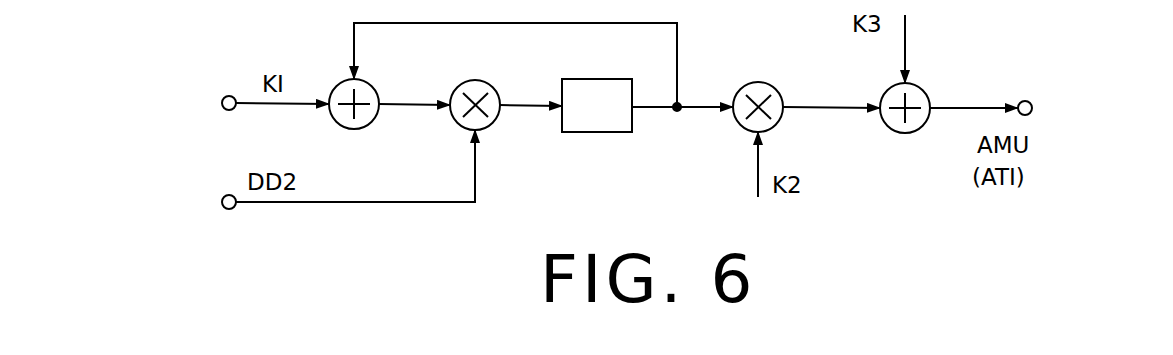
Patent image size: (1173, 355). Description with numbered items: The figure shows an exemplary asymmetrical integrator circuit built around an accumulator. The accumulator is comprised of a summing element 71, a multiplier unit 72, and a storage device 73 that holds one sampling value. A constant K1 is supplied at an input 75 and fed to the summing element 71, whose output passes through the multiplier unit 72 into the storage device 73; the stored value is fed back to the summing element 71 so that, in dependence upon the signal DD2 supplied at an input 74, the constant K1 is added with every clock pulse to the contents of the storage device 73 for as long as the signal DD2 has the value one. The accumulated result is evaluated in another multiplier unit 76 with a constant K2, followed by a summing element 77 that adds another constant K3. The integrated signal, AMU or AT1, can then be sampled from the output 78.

The summing element 71 is at (367, 95).
The multiplier unit 72 is at (485, 95).
The storage device 73 is at (627, 97).
The signal DD2 input 74 is at (233, 208).
The constant K1 input 75 is at (233, 109).
The multiplier unit 76 is at (757, 87).
The summing element 77 is at (920, 100).
The output 78 is at (1023, 100).